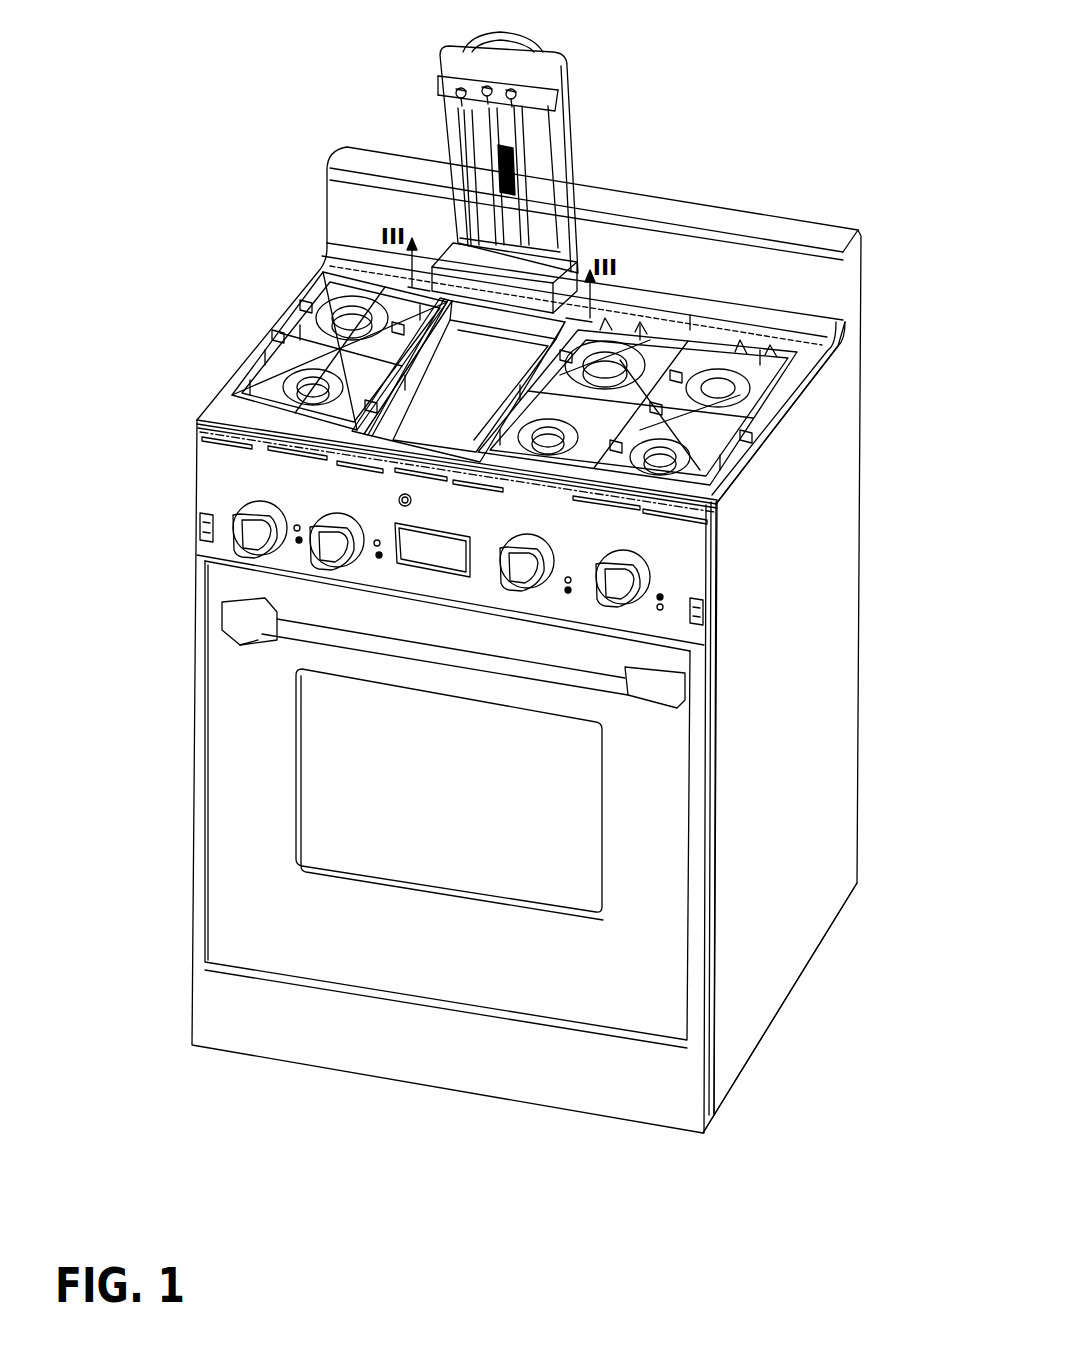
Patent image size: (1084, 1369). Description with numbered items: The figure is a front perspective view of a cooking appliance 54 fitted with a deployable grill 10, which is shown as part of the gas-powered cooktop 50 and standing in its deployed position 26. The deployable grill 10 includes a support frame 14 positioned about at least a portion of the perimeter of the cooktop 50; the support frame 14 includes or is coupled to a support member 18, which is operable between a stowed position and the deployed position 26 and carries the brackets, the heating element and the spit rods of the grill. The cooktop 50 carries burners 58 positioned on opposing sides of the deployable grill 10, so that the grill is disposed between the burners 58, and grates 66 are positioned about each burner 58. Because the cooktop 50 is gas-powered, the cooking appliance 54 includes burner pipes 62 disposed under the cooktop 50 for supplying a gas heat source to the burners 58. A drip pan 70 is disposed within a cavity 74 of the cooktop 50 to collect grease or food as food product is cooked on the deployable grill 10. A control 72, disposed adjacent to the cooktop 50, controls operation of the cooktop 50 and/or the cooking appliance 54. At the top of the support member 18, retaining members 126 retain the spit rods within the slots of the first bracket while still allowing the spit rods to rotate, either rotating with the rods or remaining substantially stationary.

The deployable grill 10 is at (485, 172).
The support frame 14 is at (826, 352).
The support member 18 is at (463, 67).
The deployed position 26 is at (587, 251).
The cooktop 50 is at (817, 342).
The cooking appliance 54 is at (828, 653).
The burner 58 is at (300, 407).
The burner pipes 62 is at (695, 540).
The grates 66 is at (395, 368).
The drip pan 70 is at (395, 426).
The control 72 is at (644, 608).
The cavity 74 is at (418, 382).
The retaining members 126 is at (457, 97).